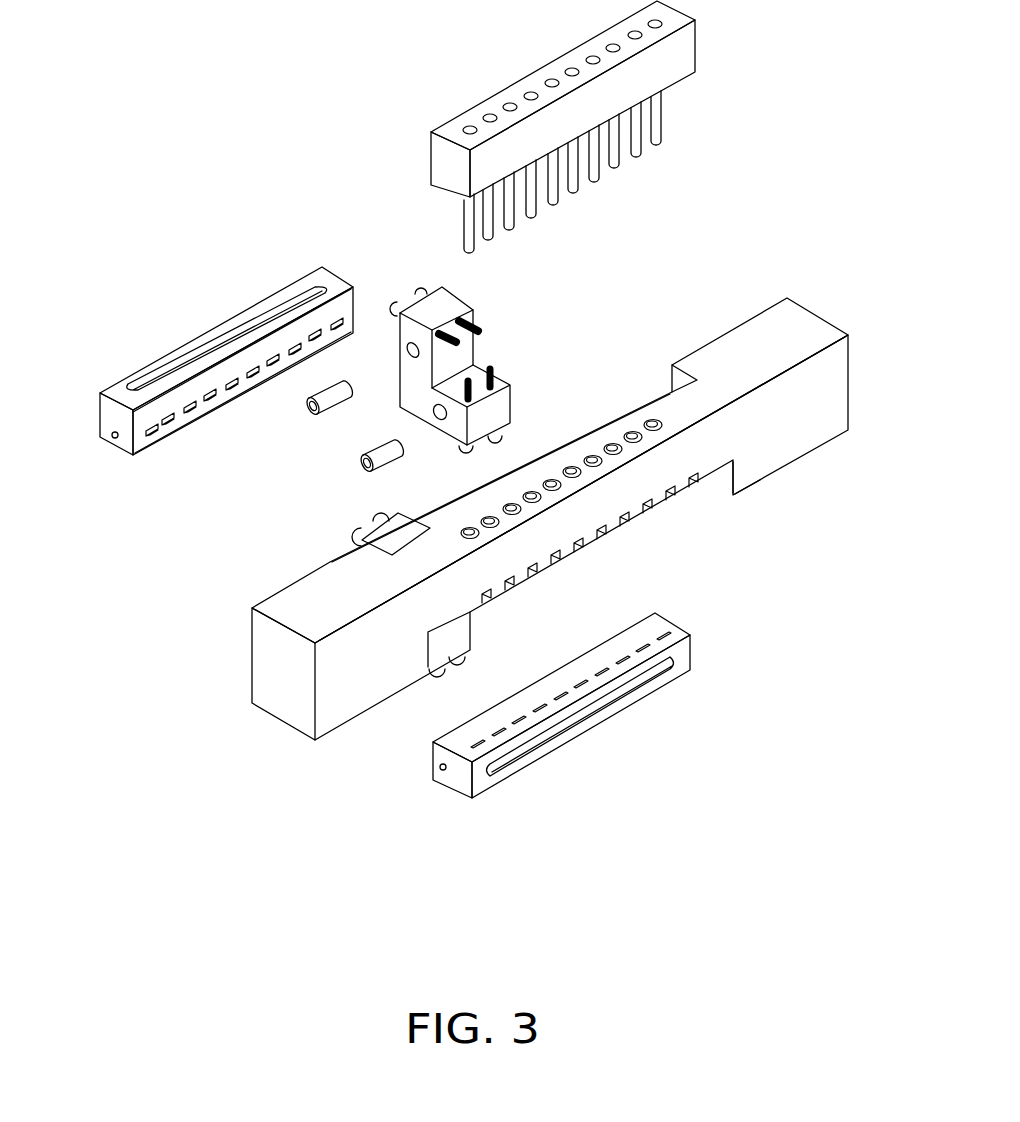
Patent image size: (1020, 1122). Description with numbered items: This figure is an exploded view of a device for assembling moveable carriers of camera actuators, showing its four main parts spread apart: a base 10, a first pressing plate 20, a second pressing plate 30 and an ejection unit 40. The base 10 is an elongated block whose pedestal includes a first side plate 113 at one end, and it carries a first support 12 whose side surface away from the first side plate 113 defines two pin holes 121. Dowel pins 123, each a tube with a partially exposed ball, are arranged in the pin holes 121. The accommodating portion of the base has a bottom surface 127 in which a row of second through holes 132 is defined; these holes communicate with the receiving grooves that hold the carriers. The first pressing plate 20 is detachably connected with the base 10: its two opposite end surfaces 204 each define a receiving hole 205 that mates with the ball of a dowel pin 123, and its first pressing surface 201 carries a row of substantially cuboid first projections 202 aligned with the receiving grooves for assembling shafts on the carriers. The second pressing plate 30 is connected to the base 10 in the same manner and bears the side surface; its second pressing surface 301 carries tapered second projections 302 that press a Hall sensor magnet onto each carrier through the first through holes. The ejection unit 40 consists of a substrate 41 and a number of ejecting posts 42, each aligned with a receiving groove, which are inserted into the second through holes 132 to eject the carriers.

The base 10 is at (550, 488).
The first support 12 is at (453, 380).
The first pressing plate 20 is at (580, 724).
The second pressing plate 30 is at (226, 384).
The ejection unit 40 is at (622, 127).
The substrate 41 is at (668, 57).
The ejecting posts 42 is at (616, 170).
The first side plate 113 is at (727, 477).
The pin holes 121 is at (440, 418).
The dowel pins 123 is at (325, 418).
The bottom surface 127 is at (582, 479).
The second through holes 132 is at (652, 420).
The first pressing surface 201 is at (552, 683).
The first projections 202 is at (618, 662).
The end surfaces 204 is at (458, 783).
The receiving hole 205 is at (111, 441).
The second pressing surface 301 is at (139, 442).
The second projections 302 is at (181, 424).